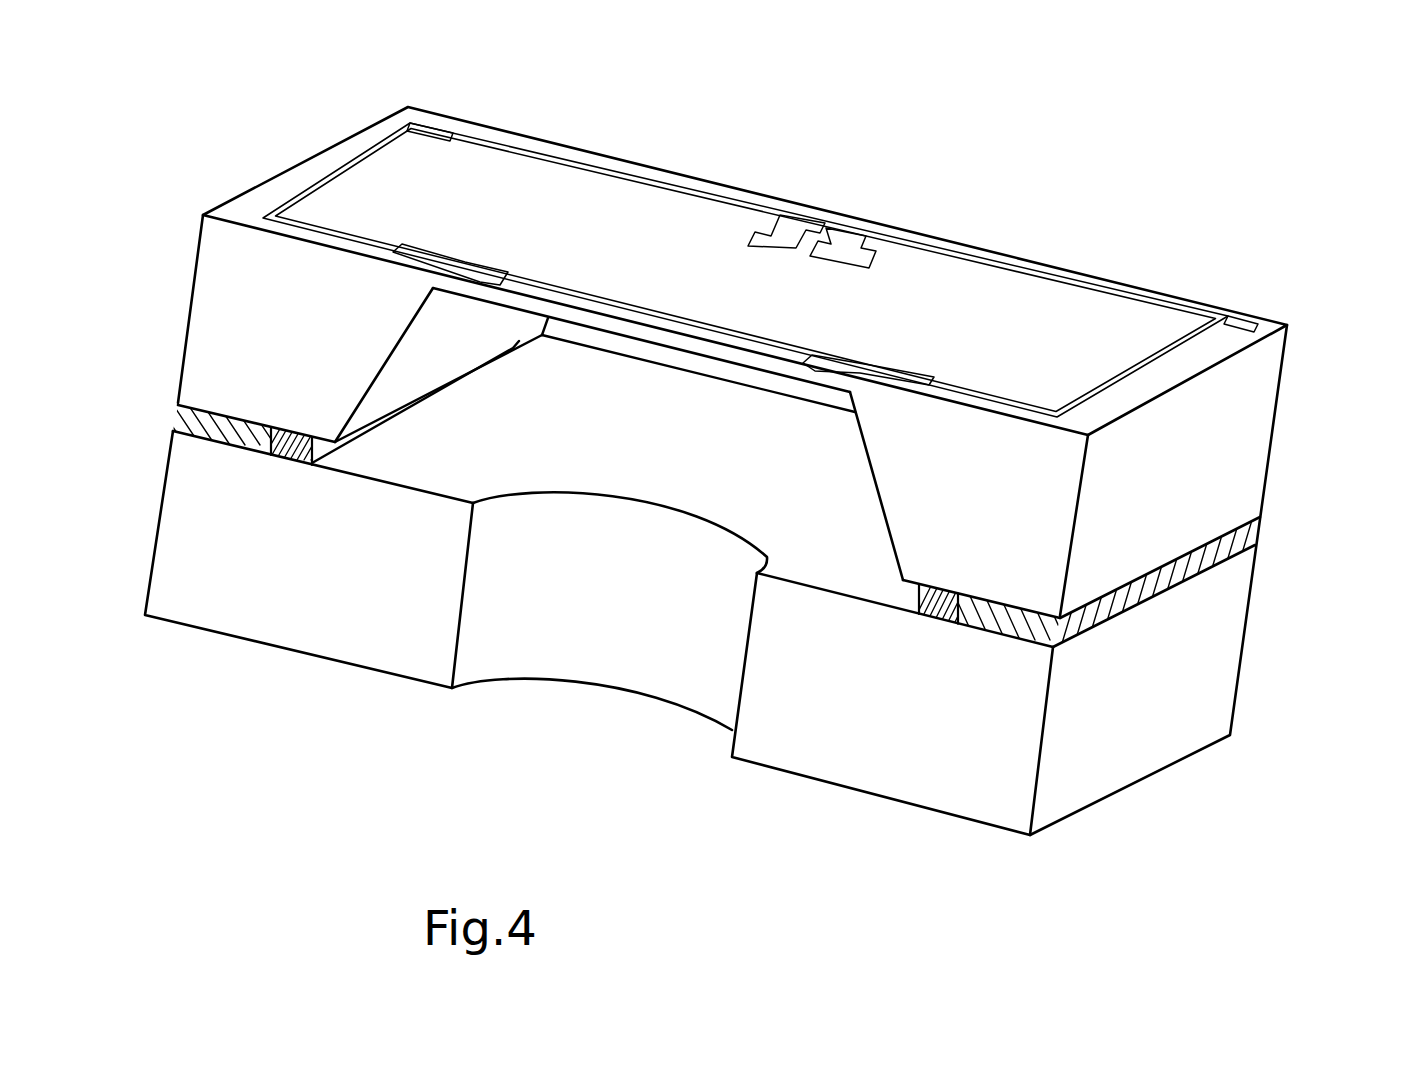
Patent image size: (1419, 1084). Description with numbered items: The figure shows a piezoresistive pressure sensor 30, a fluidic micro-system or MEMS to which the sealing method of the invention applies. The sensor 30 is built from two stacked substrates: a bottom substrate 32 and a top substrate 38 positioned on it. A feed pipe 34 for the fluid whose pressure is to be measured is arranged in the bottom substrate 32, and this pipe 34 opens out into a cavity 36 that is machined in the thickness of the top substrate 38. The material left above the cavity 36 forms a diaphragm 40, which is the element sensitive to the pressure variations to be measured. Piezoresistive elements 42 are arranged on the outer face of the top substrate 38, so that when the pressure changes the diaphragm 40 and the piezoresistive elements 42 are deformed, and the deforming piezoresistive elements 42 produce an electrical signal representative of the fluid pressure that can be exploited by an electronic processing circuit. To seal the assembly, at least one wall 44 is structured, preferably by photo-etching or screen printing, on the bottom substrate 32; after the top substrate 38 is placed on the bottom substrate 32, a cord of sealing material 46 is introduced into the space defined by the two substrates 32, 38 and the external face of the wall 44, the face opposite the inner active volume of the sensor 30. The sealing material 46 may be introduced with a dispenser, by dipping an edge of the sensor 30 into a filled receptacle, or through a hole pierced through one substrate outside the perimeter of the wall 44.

The piezoresistive pressure sensor 30 is at (1120, 206).
The bottom substrate 32 is at (1228, 690).
The feed pipe 34 is at (621, 628).
The cavity 36 is at (562, 447).
The top substrate 38 is at (1260, 417).
The diaphragm 40 is at (780, 384).
The piezoresistive elements 42 is at (500, 278).
The wall 44 is at (294, 462).
The cord of sealing material 46 is at (242, 440).